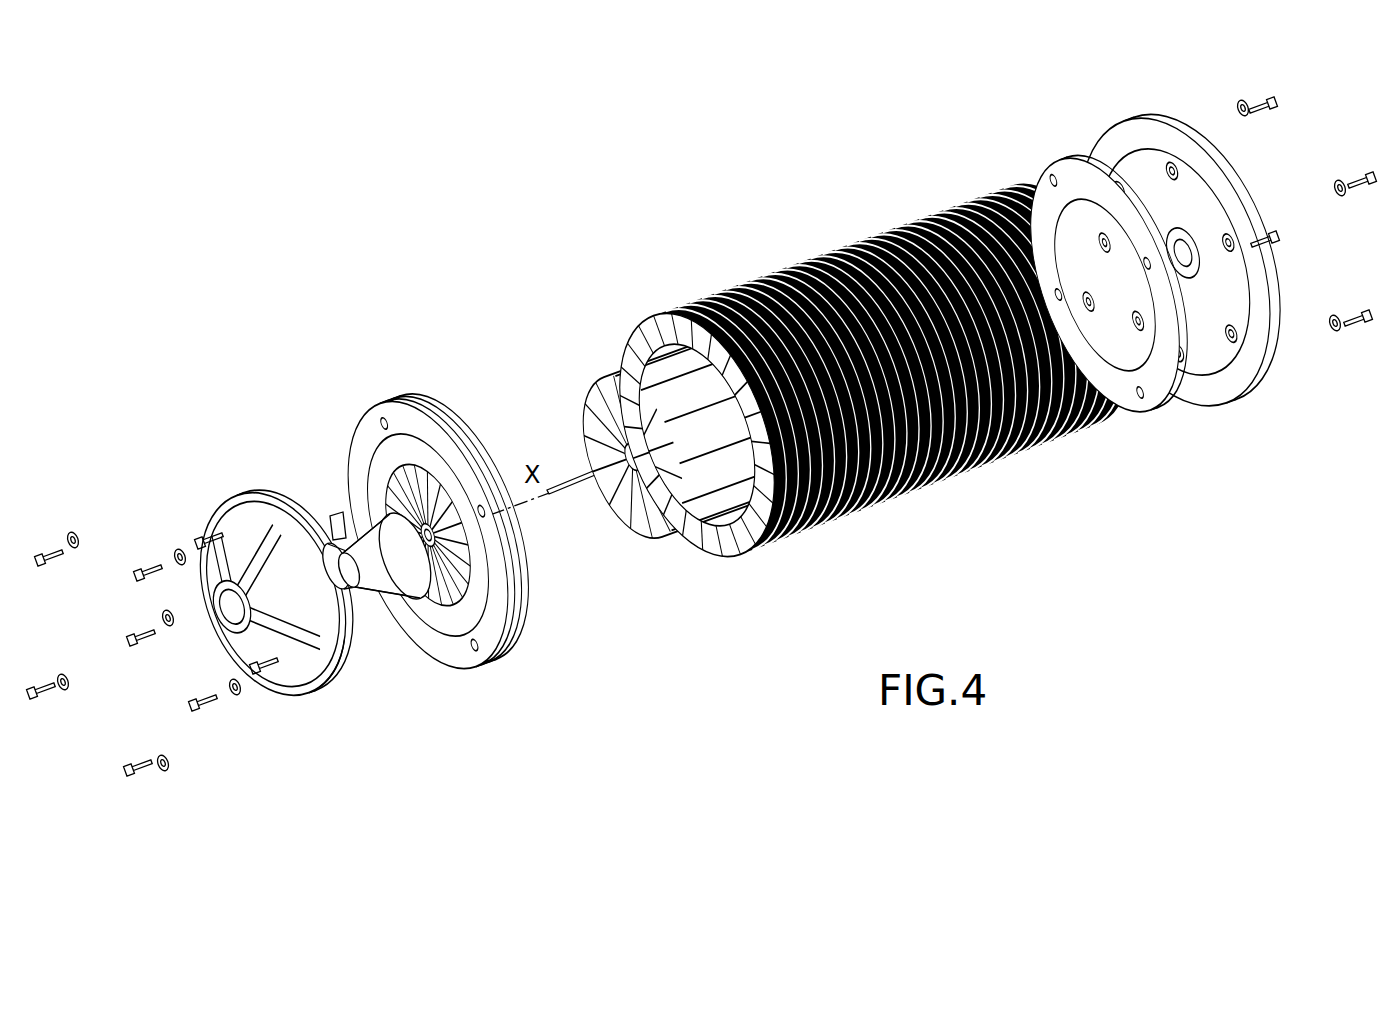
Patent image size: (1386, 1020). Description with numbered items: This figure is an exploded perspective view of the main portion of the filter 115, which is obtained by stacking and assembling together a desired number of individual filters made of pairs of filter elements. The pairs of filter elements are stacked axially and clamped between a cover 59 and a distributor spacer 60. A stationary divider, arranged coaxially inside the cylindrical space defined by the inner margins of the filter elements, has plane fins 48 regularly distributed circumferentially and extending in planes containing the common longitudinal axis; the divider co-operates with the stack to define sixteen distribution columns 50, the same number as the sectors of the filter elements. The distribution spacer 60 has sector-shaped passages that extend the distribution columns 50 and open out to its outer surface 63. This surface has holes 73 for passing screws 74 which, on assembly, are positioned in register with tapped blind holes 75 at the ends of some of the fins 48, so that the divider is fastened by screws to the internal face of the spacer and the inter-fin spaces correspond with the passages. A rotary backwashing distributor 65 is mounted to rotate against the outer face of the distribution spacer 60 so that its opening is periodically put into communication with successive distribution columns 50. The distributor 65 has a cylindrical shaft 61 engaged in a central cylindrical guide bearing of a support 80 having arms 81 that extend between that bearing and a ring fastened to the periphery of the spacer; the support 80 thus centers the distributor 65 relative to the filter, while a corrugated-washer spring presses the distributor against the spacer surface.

The plane fins 48 is at (685, 438).
The distribution columns 50 is at (697, 459).
The cover 59 is at (1225, 408).
The distributor spacer 60 is at (490, 613).
The cylindrical shaft 61 is at (350, 600).
The outer surface 63 is at (453, 625).
The rotary backwashing distributor 65 is at (343, 530).
The holes 73 is at (418, 440).
The screws 74 is at (153, 568).
The tapped blind holes 75 is at (582, 460).
The support 80 is at (276, 563).
The arms 81 is at (267, 675).
The filter 115 is at (985, 480).